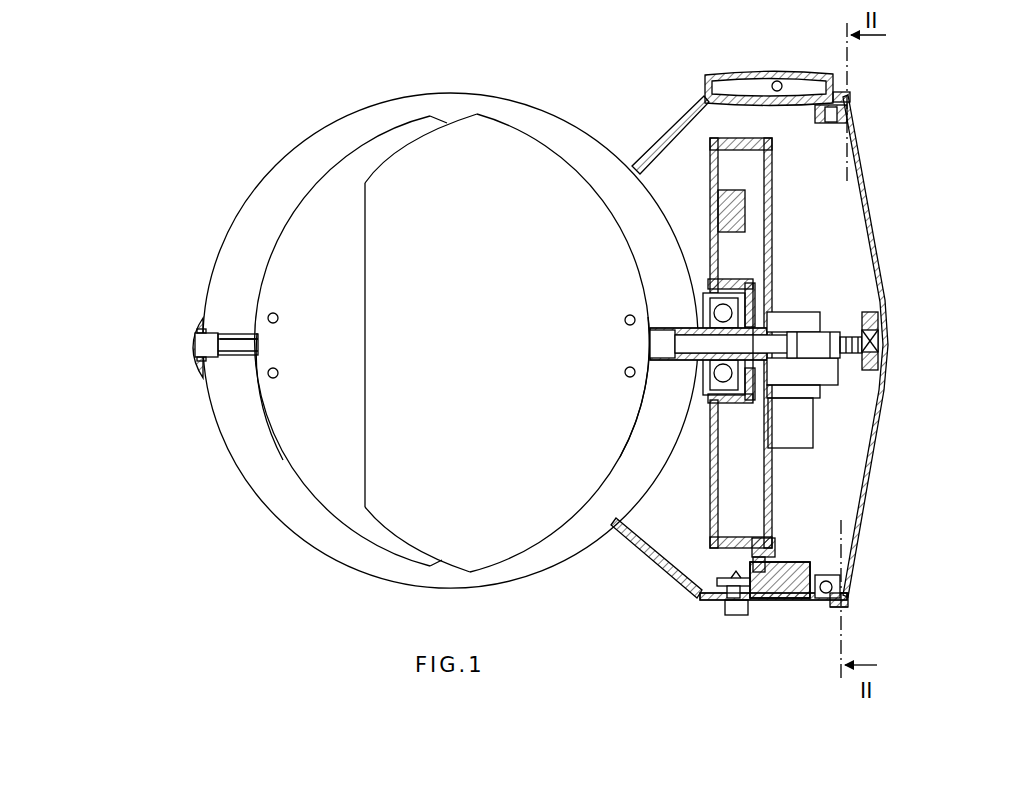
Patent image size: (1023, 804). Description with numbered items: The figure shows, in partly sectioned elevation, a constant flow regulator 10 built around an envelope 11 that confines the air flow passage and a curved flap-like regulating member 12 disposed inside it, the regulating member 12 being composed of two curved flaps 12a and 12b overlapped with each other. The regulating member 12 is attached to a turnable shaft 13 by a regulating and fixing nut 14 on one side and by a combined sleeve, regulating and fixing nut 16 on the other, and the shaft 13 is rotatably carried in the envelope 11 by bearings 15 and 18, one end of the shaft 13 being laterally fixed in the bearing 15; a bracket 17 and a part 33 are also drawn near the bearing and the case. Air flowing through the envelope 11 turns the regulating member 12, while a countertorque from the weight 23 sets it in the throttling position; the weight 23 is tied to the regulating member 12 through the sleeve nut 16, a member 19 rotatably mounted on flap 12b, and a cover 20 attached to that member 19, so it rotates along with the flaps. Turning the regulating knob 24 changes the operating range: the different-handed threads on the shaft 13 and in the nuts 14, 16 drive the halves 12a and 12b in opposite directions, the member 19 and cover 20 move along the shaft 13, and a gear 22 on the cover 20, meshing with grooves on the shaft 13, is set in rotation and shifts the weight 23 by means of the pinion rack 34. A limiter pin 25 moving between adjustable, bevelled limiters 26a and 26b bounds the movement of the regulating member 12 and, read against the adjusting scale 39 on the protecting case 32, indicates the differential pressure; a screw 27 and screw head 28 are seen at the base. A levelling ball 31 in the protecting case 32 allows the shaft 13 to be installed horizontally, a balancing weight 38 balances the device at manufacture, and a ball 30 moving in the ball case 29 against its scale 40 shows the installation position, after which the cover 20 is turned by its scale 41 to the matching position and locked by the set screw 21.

The constant flow regulator 10 is at (897, 228).
The envelope 11 is at (330, 130).
The regulating member 12 is at (545, 170).
The curved flap 12a is at (307, 475).
The curved flap 12b is at (552, 518).
The turnable shaft 13 is at (205, 335).
The regulating and fixing nut 14 is at (237, 343).
The bearing 15 is at (195, 378).
The combined sleeve, regulating and fixing nut 16 is at (672, 330).
The bearing bracket 17 is at (750, 298).
The bearing 18 is at (727, 313).
The member 19 is at (712, 178).
The cover 20 is at (772, 180).
The set screw 21 is at (770, 556).
The gear 22 is at (825, 373).
The weight 23 is at (805, 420).
The regulating knob 24 is at (883, 320).
The limiter pin 25 is at (765, 562).
The limiter 26a is at (790, 600).
The limiter 26b is at (790, 623).
The screw 27 is at (725, 614).
The screw head 28 is at (728, 580).
The ball case 29 is at (830, 585).
The ball 30 is at (845, 590).
The levelling ball 31 is at (777, 82).
The protecting case 32 is at (660, 555).
The casing 33 is at (872, 455).
The pinion rack 34 is at (765, 375).
The balancing weight 38 is at (740, 212).
The adjusting scale 39 is at (770, 600).
The scale 40 is at (847, 604).
The scale 41 is at (758, 545).